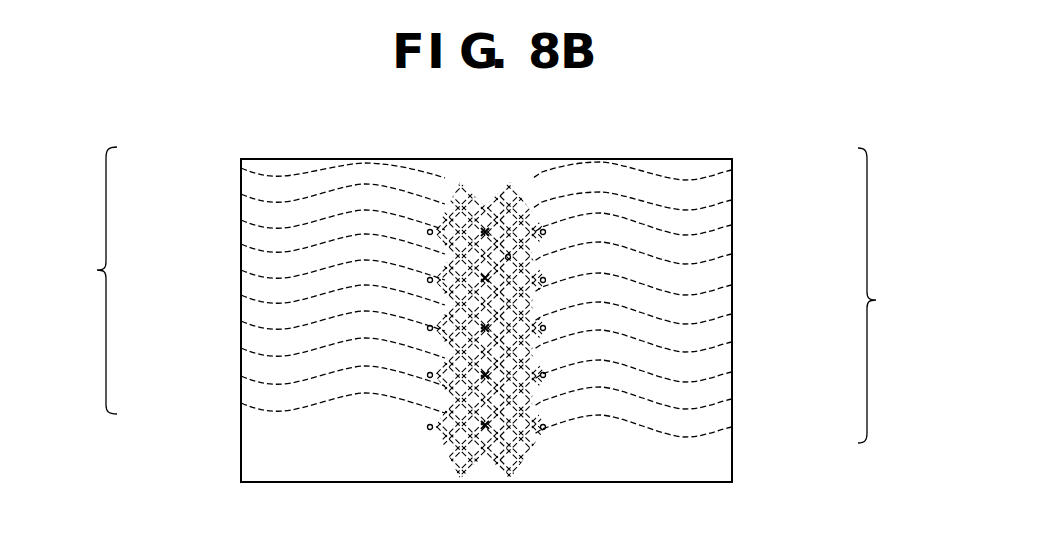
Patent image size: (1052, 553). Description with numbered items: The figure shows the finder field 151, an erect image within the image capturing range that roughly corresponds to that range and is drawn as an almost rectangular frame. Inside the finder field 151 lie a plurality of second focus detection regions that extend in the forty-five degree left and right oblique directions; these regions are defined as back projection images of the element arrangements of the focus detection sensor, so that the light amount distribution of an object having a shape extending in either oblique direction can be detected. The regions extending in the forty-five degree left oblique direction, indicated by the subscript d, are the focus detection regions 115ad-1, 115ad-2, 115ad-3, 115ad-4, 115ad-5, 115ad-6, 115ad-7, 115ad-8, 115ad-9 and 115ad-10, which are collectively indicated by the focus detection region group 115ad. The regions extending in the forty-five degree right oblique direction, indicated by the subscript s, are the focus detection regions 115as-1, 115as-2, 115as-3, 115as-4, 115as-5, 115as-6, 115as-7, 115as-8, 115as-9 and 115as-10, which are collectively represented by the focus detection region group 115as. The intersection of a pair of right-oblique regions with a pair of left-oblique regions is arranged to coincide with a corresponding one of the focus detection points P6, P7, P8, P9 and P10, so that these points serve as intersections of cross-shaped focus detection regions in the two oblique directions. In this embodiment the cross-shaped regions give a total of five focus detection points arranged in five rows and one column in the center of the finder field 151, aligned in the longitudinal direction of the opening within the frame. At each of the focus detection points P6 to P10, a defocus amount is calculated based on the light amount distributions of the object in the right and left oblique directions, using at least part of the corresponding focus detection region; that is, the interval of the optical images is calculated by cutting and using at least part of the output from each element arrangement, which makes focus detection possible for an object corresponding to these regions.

The finder field 151 is at (622, 159).
The focus detection region group 115ad is at (97, 270).
The focus detection region group 115as is at (876, 300).
The second focus detection region 115ad-1 is at (241, 168).
The second focus detection region 115ad-2 is at (241, 194).
The second focus detection region 115ad-3 is at (241, 220).
The second focus detection region 115ad-4 is at (241, 244).
The second focus detection region 115ad-5 is at (241, 270).
The second focus detection region 115ad-6 is at (241, 295).
The second focus detection region 115ad-7 is at (241, 321).
The second focus detection region 115ad-8 is at (241, 348).
The second focus detection region 115ad-9 is at (241, 376).
The second focus detection region 115ad-10 is at (241, 403).
The second focus detection region 115as-1 is at (732, 170).
The second focus detection region 115as-2 is at (732, 200).
The second focus detection region 115as-3 is at (732, 225).
The second focus detection region 115as-4 is at (732, 254).
The second focus detection region 115as-5 is at (732, 285).
The second focus detection region 115as-6 is at (732, 314).
The second focus detection region 115as-7 is at (732, 342).
The second focus detection region 115as-8 is at (732, 372).
The second focus detection region 115as-9 is at (732, 399).
The second focus detection region 115as-10 is at (732, 427).
The focus detection point P6 is at (485, 232).
The focus detection point P7 is at (485, 278).
The focus detection point P8 is at (486, 328).
The focus detection point P9 is at (485, 375).
The focus detection point P10 is at (486, 425).